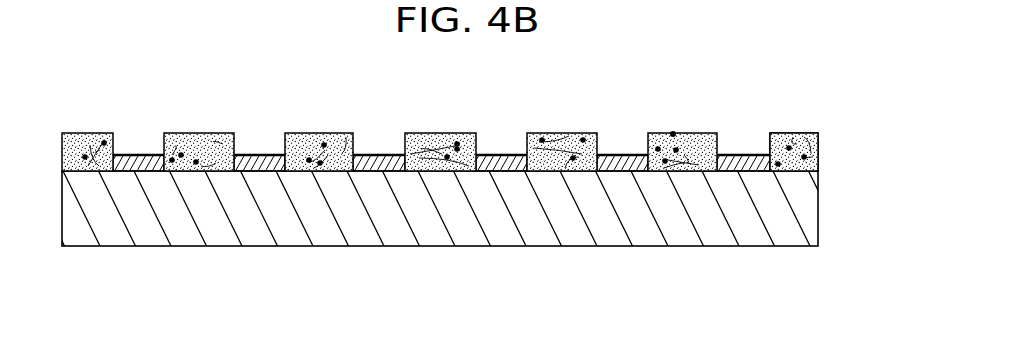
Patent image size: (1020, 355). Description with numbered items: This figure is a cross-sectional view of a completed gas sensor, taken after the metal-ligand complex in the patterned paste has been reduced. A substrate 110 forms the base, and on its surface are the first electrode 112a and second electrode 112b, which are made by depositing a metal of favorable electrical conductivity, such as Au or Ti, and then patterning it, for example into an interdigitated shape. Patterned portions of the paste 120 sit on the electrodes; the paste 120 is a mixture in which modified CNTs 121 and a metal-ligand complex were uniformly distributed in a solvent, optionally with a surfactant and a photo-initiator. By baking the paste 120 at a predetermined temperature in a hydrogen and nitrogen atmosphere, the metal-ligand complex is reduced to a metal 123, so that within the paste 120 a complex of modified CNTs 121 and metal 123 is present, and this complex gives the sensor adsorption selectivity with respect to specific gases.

The substrate 110 is at (806, 200).
The first electrode 112a is at (256, 162).
The second electrode 112b is at (135, 162).
The paste 120 is at (808, 117).
The modified CNTs 121 is at (788, 146).
The metal 123 is at (672, 131).